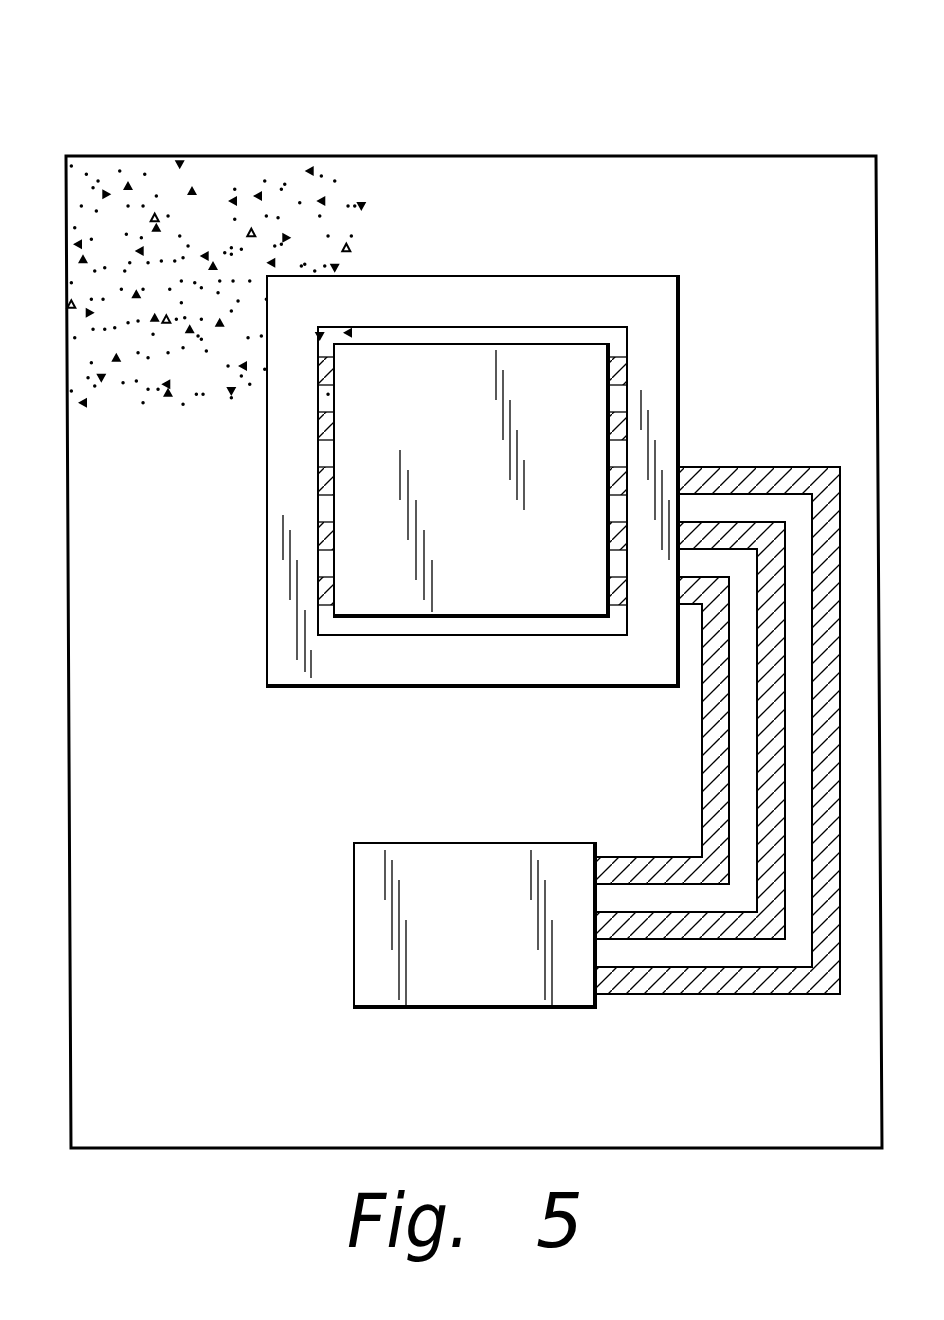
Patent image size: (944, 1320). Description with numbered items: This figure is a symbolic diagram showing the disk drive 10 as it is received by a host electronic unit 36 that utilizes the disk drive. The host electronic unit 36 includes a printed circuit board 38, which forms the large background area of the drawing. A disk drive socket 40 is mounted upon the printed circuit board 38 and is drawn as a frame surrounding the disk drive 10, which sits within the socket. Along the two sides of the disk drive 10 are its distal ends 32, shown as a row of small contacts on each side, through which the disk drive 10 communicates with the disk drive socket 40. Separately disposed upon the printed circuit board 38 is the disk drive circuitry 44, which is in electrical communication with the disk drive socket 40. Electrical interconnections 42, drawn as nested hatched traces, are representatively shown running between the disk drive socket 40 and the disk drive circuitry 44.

The host electronic unit 36 is at (496, 114).
The printed circuit board 38 is at (213, 228).
The disk drive socket 40 is at (680, 318).
The disk drive 10 is at (482, 452).
The distal ends 32 is at (334, 372).
The electrical interconnections 42 is at (823, 808).
The disk drive circuitry 44 is at (482, 935).